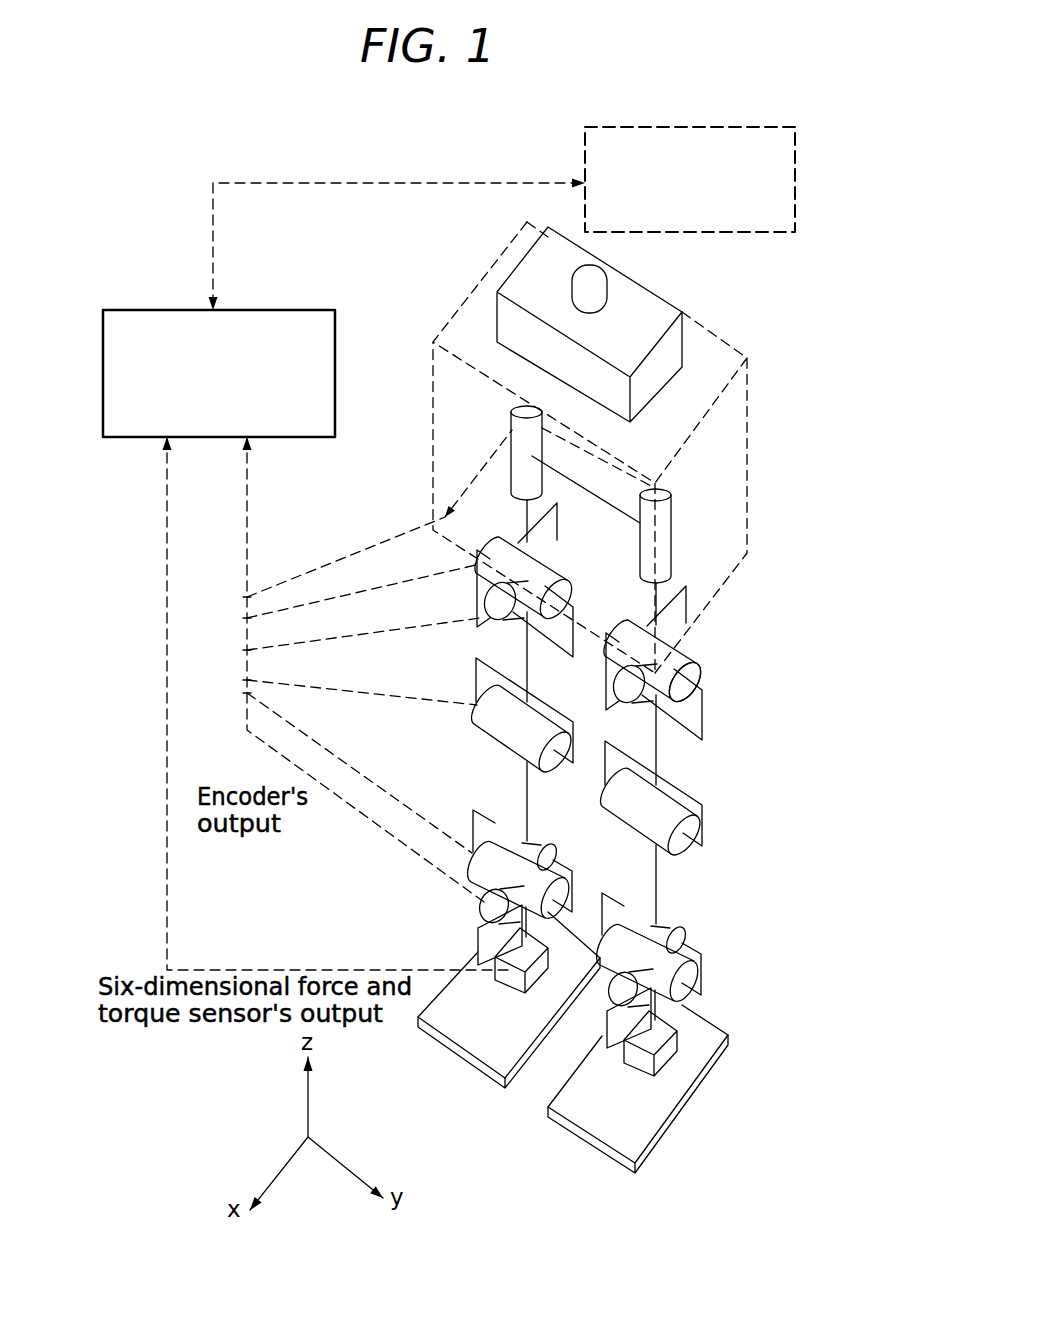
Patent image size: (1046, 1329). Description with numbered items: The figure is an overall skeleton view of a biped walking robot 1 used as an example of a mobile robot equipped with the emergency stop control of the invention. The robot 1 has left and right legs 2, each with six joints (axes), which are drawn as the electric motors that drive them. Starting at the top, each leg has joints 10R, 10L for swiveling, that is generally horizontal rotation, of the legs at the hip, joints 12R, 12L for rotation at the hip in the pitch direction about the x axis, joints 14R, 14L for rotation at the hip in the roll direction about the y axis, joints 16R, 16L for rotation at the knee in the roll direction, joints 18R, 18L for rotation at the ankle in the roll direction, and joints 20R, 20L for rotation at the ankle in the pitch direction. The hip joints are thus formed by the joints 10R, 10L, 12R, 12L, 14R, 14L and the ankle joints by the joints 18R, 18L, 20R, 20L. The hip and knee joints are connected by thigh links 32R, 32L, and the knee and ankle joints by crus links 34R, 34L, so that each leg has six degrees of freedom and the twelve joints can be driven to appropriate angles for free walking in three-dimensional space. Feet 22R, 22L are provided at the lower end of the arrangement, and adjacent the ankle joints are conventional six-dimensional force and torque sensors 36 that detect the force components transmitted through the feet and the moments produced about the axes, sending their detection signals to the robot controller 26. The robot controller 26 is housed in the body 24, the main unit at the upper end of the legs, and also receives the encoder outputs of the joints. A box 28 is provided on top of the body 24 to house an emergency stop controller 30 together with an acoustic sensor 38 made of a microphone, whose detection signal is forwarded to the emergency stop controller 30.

The biped walking robot 1 is at (700, 646).
The legs 2 is at (698, 789).
The right hip swivel joint 10R is at (543, 478).
The left hip swivel joint 10L is at (672, 556).
The right hip pitch joint 12R is at (557, 551).
The left hip pitch joint 12L is at (690, 628).
The right hip roll joint 14R is at (567, 592).
The left hip roll joint 14L is at (703, 677).
The right knee joint 16R is at (552, 775).
The left knee joint 16L is at (682, 843).
The right ankle roll joint 18R is at (557, 925).
The left ankle roll joint 18L is at (687, 1002).
The right ankle pitch joint 20R is at (560, 845).
The left ankle pitch joint 20L is at (690, 923).
The right foot 22R is at (478, 1047).
The left foot 22L is at (662, 1112).
The body 24 is at (752, 418).
The robot controller 26 is at (290, 310).
The box 28 is at (663, 302).
The emergency stop controller 30 is at (755, 234).
The right thigh link 32R is at (527, 676).
The left thigh link 32L is at (656, 745).
The right crus link 34R is at (527, 797).
The left crus link 34L is at (656, 875).
The six-dimensional force and torque sensor 36 is at (508, 980).
The acoustic sensor 38 is at (607, 292).